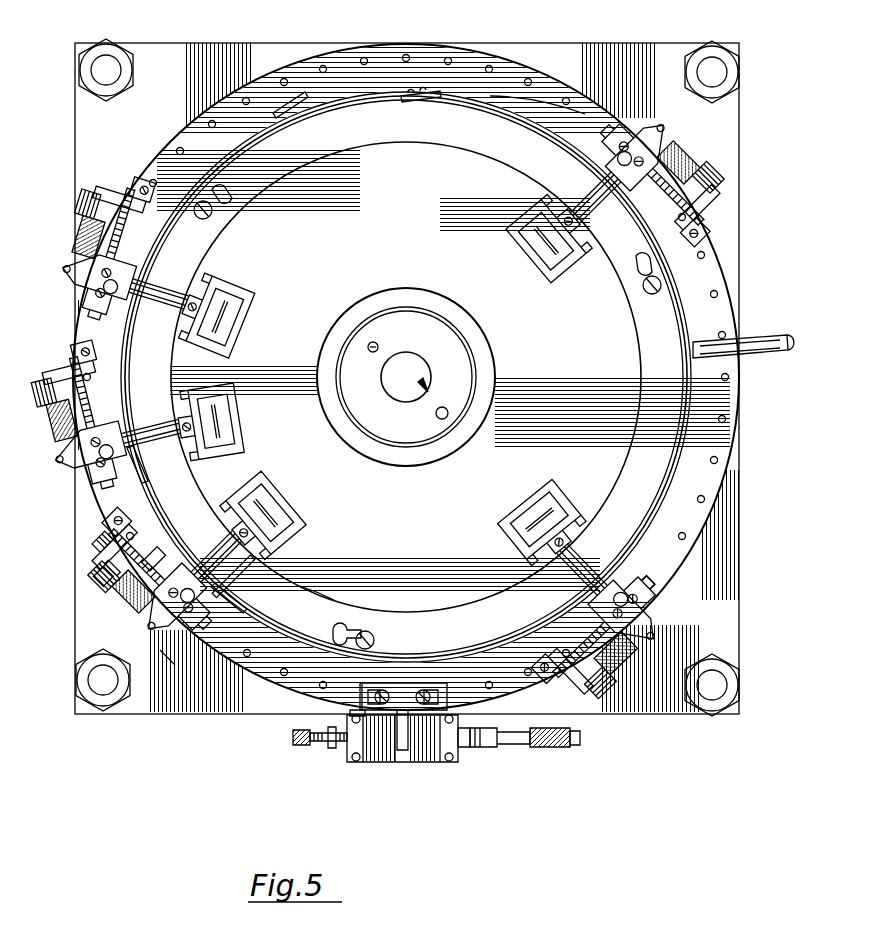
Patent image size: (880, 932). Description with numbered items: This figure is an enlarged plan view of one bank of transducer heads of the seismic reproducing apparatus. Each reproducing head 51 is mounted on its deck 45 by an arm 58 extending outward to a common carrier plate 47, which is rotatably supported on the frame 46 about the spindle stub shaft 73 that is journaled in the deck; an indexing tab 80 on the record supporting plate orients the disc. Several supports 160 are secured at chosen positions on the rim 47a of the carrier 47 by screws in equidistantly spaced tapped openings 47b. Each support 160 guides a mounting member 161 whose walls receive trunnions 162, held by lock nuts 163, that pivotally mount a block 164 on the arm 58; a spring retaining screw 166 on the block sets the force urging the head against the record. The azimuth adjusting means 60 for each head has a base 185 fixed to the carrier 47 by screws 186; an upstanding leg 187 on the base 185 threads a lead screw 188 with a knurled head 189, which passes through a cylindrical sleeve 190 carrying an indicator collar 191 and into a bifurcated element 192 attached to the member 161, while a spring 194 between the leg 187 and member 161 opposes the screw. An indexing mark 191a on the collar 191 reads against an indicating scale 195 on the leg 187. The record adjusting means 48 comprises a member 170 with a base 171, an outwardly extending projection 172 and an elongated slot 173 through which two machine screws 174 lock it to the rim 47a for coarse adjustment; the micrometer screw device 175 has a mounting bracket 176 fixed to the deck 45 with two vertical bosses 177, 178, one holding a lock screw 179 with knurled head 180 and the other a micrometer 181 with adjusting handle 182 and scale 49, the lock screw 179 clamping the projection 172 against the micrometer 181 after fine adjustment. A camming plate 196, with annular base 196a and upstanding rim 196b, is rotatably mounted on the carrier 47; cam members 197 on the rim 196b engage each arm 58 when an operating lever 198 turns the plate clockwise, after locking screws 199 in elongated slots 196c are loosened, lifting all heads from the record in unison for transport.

The deck 45 is at (83, 598).
The frame 46 is at (97, 708).
The carrier plate 47 is at (476, 40).
The rim 47a is at (545, 88).
The tapped openings 47b is at (717, 455).
The record adjusting means 48 is at (412, 783).
The scale 49 is at (503, 747).
The reproducing head 51 is at (523, 223).
The arm 58 is at (583, 188).
The azimuth adjusting means 60 is at (696, 153).
The stub shaft 73 is at (445, 356).
The indexing tab 80 is at (379, 347).
The support 160 is at (660, 592).
The mounting member 161 is at (240, 582).
The trunnions 162 is at (207, 623).
The lock nuts 163 is at (200, 630).
The block 164 is at (165, 622).
The spring retaining screw 166 is at (167, 650).
The member 170 is at (436, 679).
The base 171 is at (352, 711).
The projection 172 is at (408, 752).
The elongated slot 173 is at (362, 690).
The machine screws 174 is at (423, 689).
The micrometer screw device 175 is at (368, 752).
The mounting bracket 176 is at (398, 755).
The vertical boss 177 is at (333, 748).
The vertical boss 178 is at (464, 748).
The lock screw 179 is at (318, 735).
The knurled head 180 is at (298, 745).
The micrometer 181 is at (550, 748).
The adjusting handle 182 is at (576, 738).
The base 185 is at (117, 523).
The screws 186 is at (120, 517).
The upstanding leg 187 is at (137, 533).
The lead screw 188 is at (103, 553).
The knurled head 189 is at (102, 542).
The cylindrical sleeve 190 is at (153, 603).
The indicator collar 191 is at (102, 582).
The indexing mark 191a is at (111, 592).
The element 192 is at (160, 620).
The spring 194 is at (157, 555).
The indicating scale 195 is at (102, 578).
The camming plate 196 is at (462, 603).
The annular base 196a is at (304, 588).
The upstanding rim 196b is at (663, 497).
The elongated slots 196c is at (228, 199).
The cam members 197 is at (446, 88).
The operating lever 198 is at (782, 322).
The locking screws 199 is at (213, 218).